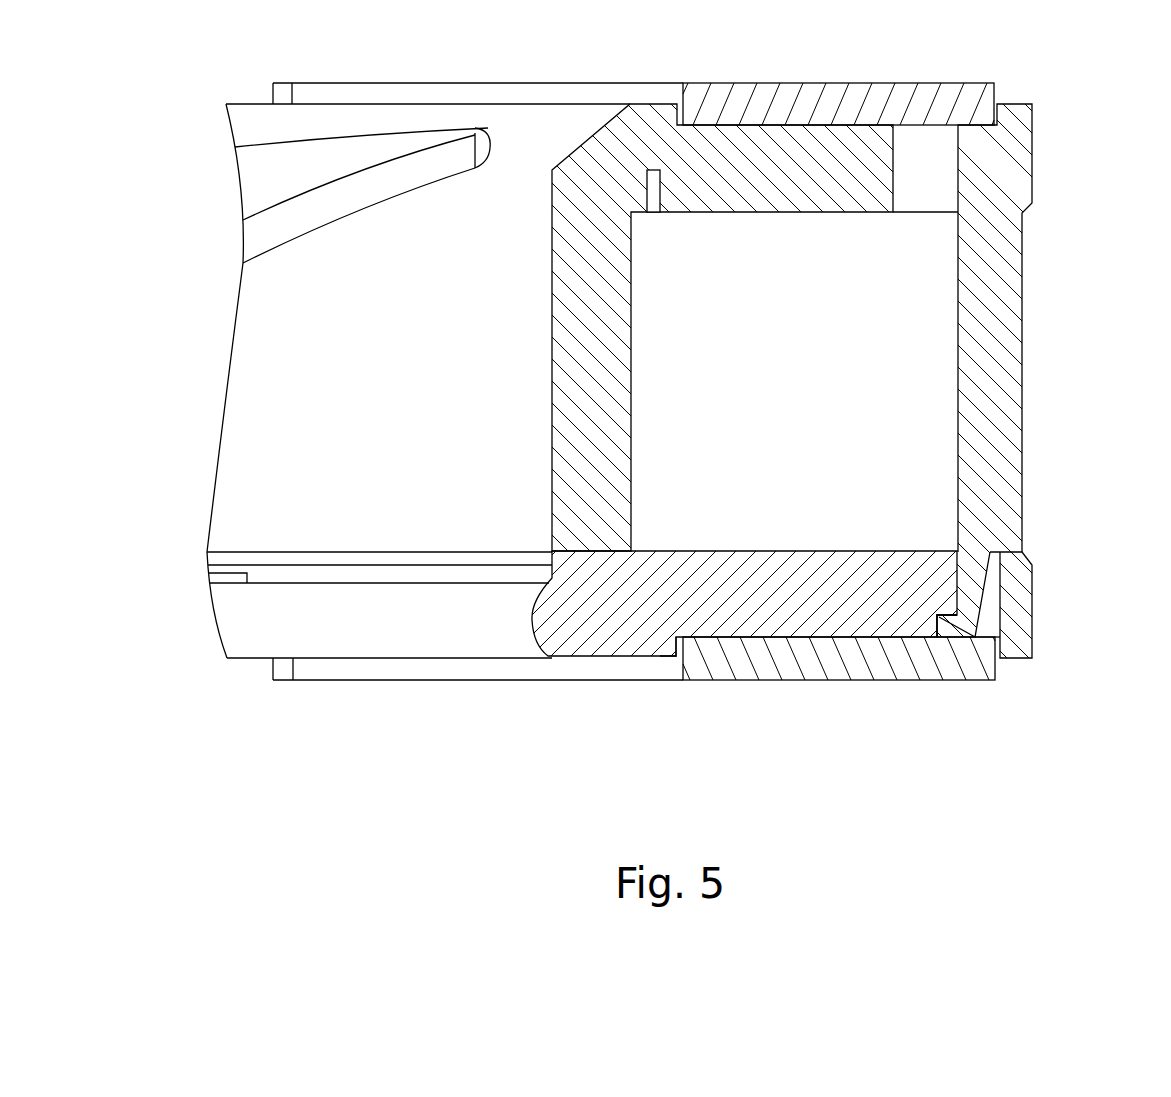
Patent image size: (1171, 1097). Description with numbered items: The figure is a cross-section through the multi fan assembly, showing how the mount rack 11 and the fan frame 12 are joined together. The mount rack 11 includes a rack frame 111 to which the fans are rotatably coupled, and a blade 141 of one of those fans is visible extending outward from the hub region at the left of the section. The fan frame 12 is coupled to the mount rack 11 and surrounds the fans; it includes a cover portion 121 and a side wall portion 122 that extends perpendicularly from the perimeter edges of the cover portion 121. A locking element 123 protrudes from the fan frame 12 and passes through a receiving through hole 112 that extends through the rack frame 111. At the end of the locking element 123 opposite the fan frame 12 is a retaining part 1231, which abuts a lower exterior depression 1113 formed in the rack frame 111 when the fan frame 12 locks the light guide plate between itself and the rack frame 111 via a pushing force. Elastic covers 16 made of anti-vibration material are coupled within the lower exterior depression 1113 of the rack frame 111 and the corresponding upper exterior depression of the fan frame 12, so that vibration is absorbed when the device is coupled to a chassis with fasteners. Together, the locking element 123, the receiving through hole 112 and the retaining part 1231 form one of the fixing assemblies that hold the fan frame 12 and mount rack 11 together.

The mount rack 11 is at (671, 394).
The rack frame 111 is at (630, 633).
The lower exterior depression 1113 is at (678, 656).
The receiving through hole 112 is at (940, 636).
The fan frame 12 is at (838, 379).
The cover portion 121 is at (643, 130).
The side wall portion 122 is at (1023, 422).
The locking element 123 is at (1003, 646).
The retaining part 1231 is at (999, 678).
The blade 141 is at (329, 153).
The elastic cover 16 is at (840, 95).